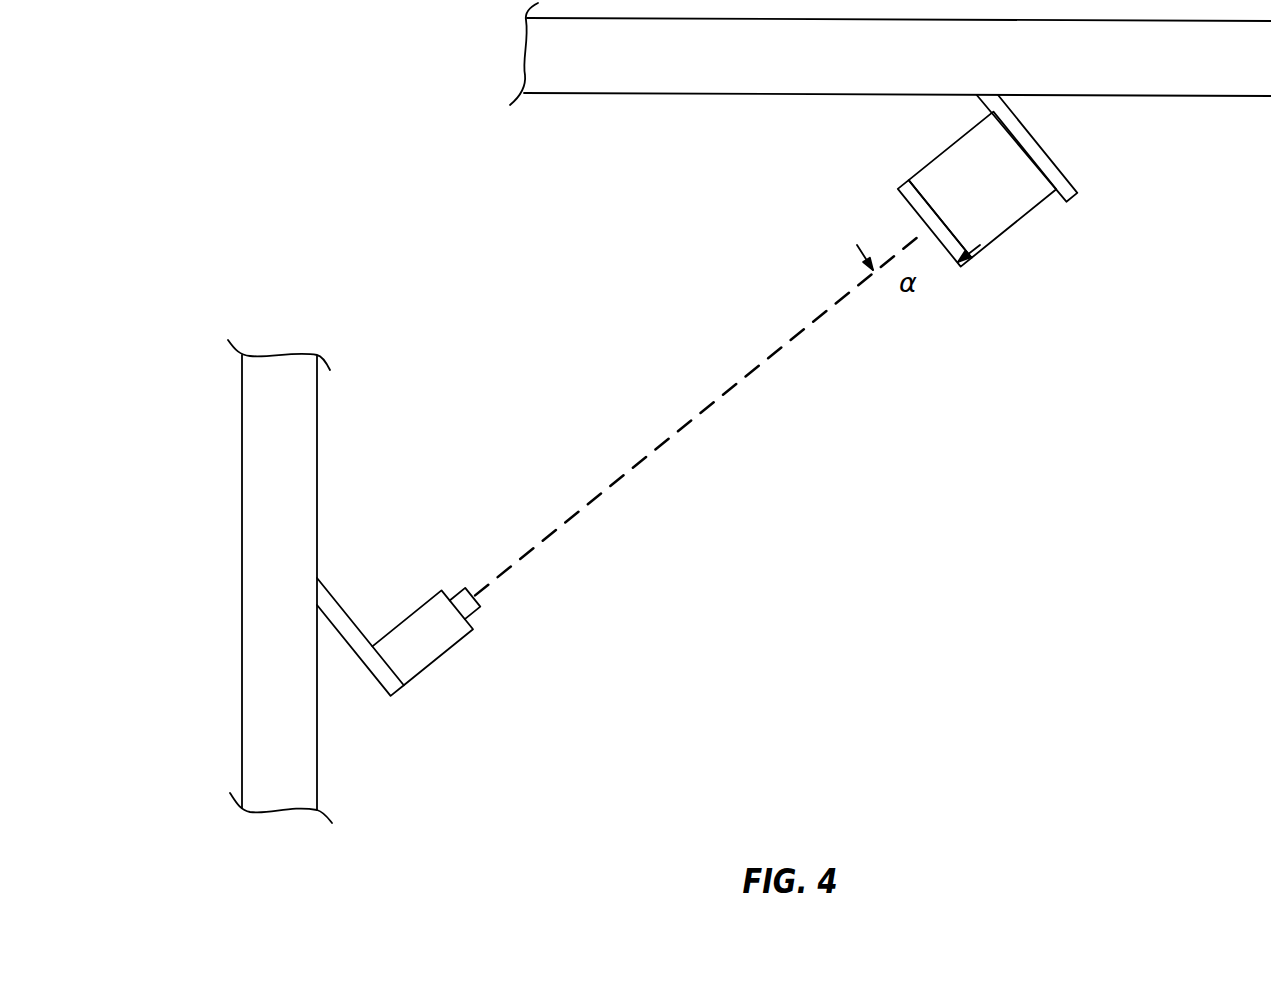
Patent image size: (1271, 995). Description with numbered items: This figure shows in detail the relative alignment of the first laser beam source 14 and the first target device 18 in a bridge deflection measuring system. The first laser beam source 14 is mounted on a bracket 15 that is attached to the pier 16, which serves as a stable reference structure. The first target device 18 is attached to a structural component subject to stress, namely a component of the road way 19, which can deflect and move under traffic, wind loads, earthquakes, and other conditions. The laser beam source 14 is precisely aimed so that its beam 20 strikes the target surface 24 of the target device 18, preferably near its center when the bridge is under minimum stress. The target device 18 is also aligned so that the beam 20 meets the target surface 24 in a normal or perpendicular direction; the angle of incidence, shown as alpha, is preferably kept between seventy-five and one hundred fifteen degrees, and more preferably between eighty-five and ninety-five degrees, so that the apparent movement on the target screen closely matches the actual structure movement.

The first laser beam source 14 is at (434, 642).
The bracket 15 is at (338, 605).
The pier 16 is at (267, 612).
The first target device 18 is at (1004, 248).
The road way 19 is at (712, 82).
The beam 20 is at (647, 447).
The target surface 24 is at (944, 256).